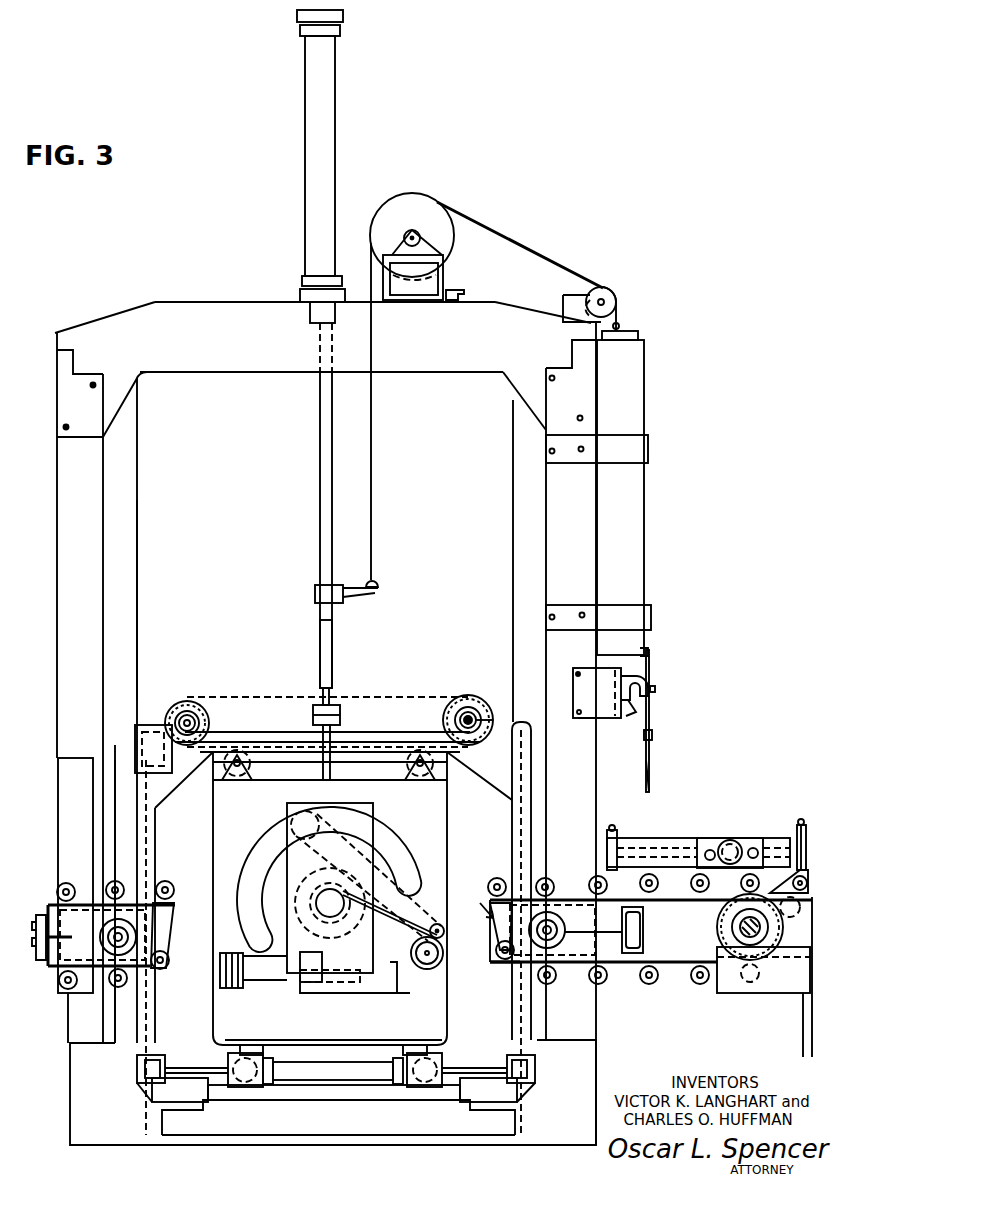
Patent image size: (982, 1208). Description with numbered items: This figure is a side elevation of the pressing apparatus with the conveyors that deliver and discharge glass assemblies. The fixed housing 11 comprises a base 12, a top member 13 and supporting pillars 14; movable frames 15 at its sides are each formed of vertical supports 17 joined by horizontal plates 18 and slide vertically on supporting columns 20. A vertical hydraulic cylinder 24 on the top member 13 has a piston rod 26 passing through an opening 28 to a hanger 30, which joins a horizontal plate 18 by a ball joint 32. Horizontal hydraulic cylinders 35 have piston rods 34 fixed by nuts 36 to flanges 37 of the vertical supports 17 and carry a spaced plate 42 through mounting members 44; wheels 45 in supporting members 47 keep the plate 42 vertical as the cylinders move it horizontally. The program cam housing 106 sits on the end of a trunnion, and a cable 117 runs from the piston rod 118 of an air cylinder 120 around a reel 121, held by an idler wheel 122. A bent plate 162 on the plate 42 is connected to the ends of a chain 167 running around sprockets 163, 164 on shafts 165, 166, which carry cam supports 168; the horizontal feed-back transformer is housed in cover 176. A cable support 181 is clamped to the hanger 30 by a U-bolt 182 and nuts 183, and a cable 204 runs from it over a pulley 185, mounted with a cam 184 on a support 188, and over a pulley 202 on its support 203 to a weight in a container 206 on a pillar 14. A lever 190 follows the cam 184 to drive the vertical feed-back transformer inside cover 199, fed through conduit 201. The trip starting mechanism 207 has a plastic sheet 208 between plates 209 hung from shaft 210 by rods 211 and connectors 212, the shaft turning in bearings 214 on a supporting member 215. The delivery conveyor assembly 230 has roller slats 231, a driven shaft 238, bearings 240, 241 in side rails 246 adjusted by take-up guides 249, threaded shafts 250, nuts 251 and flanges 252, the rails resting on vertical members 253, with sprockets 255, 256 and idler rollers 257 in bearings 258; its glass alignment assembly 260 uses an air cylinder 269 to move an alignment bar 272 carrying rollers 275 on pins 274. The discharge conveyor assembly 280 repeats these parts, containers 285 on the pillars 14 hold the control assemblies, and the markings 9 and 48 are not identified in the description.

The chain conveyor 9 is at (212, 690).
The fixed housing 11 is at (116, 318).
The base 12 is at (70, 1115).
The top member 13 is at (231, 310).
The supporting pillars 14 is at (66, 697).
The movable frames 15 is at (124, 828).
The vertical supports 17 is at (150, 857).
The horizontal plates 18 is at (360, 764).
The supporting columns 20 is at (137, 651).
The hydraulic cylinder 24 is at (332, 165).
The piston rod 26 is at (320, 494).
The opening 28 is at (310, 308).
The hanger 30 is at (332, 652).
The ball joint 32 is at (340, 709).
The piston rods 34 is at (205, 1068).
The horizontal hydraulic cylinders 35 is at (334, 1079).
The nuts 36 is at (145, 1068).
The flanges 37 is at (165, 1083).
The spaced plate 42 is at (447, 822).
The mounting members 44 is at (262, 1088).
The wheels 45 is at (250, 767).
The supporting members 47 is at (247, 775).
The arcuate guide 48 is at (267, 837).
The program cam housing 106 is at (373, 812).
The cable 117 is at (410, 918).
The piston rod 118 is at (326, 968).
The air cylinder 120 is at (272, 982).
The reel 121 is at (443, 954).
The idler wheel 122 is at (444, 931).
The bent plate 162 is at (323, 768).
The sprocket 163 is at (176, 706).
The sprocket 164 is at (480, 706).
The shaft 165 is at (210, 728).
The shaft 166 is at (480, 740).
The chain 167 is at (452, 698).
The cam supports 168 is at (200, 714).
The cover 176 is at (135, 739).
The cable support 181 is at (376, 592).
The U-bolt 182 is at (315, 592).
The nuts 183 is at (350, 598).
The cam 184 is at (412, 230).
The pulley 185 is at (452, 238).
The support 188 is at (452, 214).
The lever 190 is at (403, 243).
The cover 199 is at (443, 277).
The conduit 201 is at (456, 303).
The pulley 202 is at (615, 295).
The support 203 is at (566, 306).
The cable 204 is at (532, 242).
The container 206 is at (644, 398).
The trip starting mechanism 207 is at (651, 718).
The sheet 208 is at (651, 765).
The plates 209 is at (653, 737).
The shaft 210 is at (622, 684).
The rods 211 is at (648, 656).
The connectors 212 is at (652, 682).
The bearings 214 is at (636, 712).
The supporting member 215 is at (585, 716).
The delivery conveyor assembly 230 is at (472, 910).
The roller slats 231 is at (60, 880).
The shaft 238 is at (738, 930).
The bearings 240 is at (742, 958).
The bearings 241 is at (80, 992).
The side rails 246 is at (56, 960).
The take-up guides 249 is at (138, 937).
The take-up threaded shafts 250 is at (78, 915).
The nuts 251 is at (636, 922).
The flanges 252 is at (636, 940).
The vertical members 253 is at (811, 1018).
The sprocket 255 is at (722, 916).
The sprocket 256 is at (520, 964).
The idler rollers 257 is at (172, 886).
The bearings 258 is at (172, 893).
The glass alignment assembly 260 is at (707, 830).
The air cylinder 269 is at (735, 840).
The alignment bar 272 is at (673, 838).
The pins 274 is at (801, 822).
The rollers 275 is at (618, 840).
The discharge conveyor assembly 280 is at (48, 903).
The containers 285 is at (68, 781).